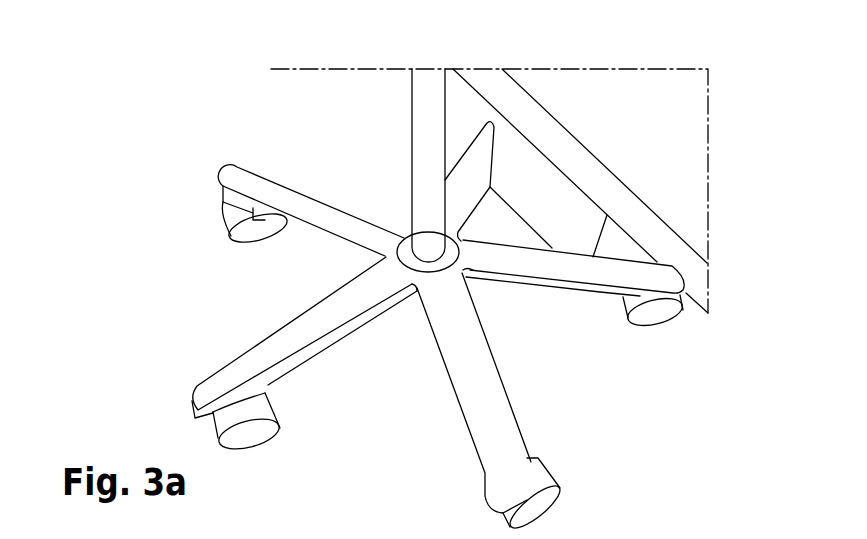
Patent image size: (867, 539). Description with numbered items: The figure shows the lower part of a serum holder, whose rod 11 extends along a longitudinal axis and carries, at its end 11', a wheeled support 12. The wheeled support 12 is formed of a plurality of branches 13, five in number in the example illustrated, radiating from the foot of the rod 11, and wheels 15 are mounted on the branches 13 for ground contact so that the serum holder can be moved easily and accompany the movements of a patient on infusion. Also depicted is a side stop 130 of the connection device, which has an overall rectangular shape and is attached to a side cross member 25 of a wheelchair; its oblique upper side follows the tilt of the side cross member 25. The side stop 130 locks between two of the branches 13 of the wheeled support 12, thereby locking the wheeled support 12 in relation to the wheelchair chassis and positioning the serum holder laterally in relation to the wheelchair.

The rod 11 is at (427, 133).
The end of rod 11' is at (372, 127).
The wheeled support 12 is at (246, 264).
The branches 13 is at (320, 328).
The wheels 15 is at (248, 430).
The side cross member 25 is at (655, 230).
The side stop 130 is at (583, 213).